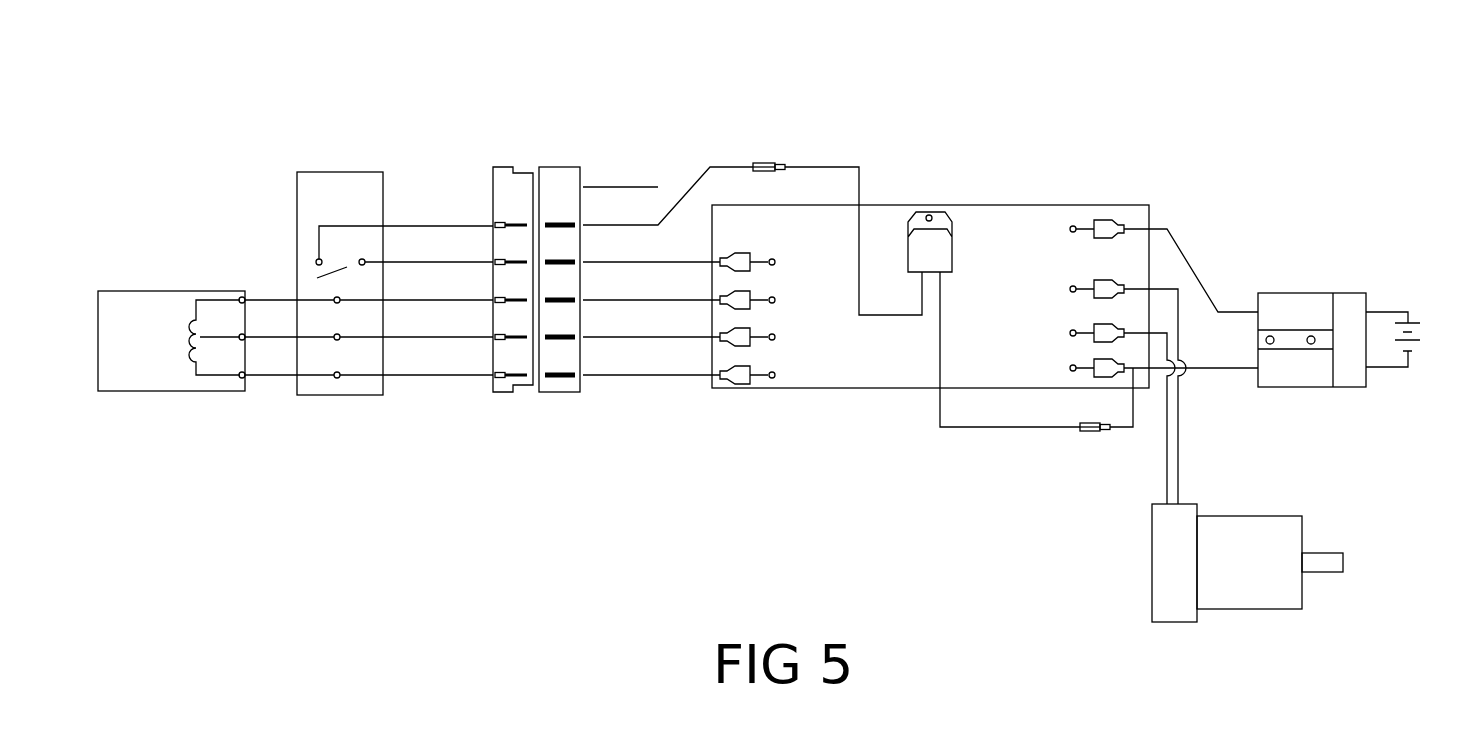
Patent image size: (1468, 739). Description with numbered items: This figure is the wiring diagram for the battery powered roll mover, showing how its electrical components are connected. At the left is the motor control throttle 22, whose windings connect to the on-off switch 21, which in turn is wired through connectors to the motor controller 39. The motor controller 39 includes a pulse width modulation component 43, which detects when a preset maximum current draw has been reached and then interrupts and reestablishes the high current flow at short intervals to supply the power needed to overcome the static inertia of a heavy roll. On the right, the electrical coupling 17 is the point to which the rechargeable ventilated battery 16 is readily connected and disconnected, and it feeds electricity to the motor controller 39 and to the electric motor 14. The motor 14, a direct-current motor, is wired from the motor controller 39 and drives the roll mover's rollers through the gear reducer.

The motor 14 is at (1152, 600).
The battery 16 is at (1420, 323).
The electrical coupling 17 is at (1288, 293).
The on-off switch 21 is at (338, 273).
The motor control throttle 22 is at (172, 391).
The motor controller 39 is at (830, 390).
The pulse width modulation component 43 is at (952, 214).